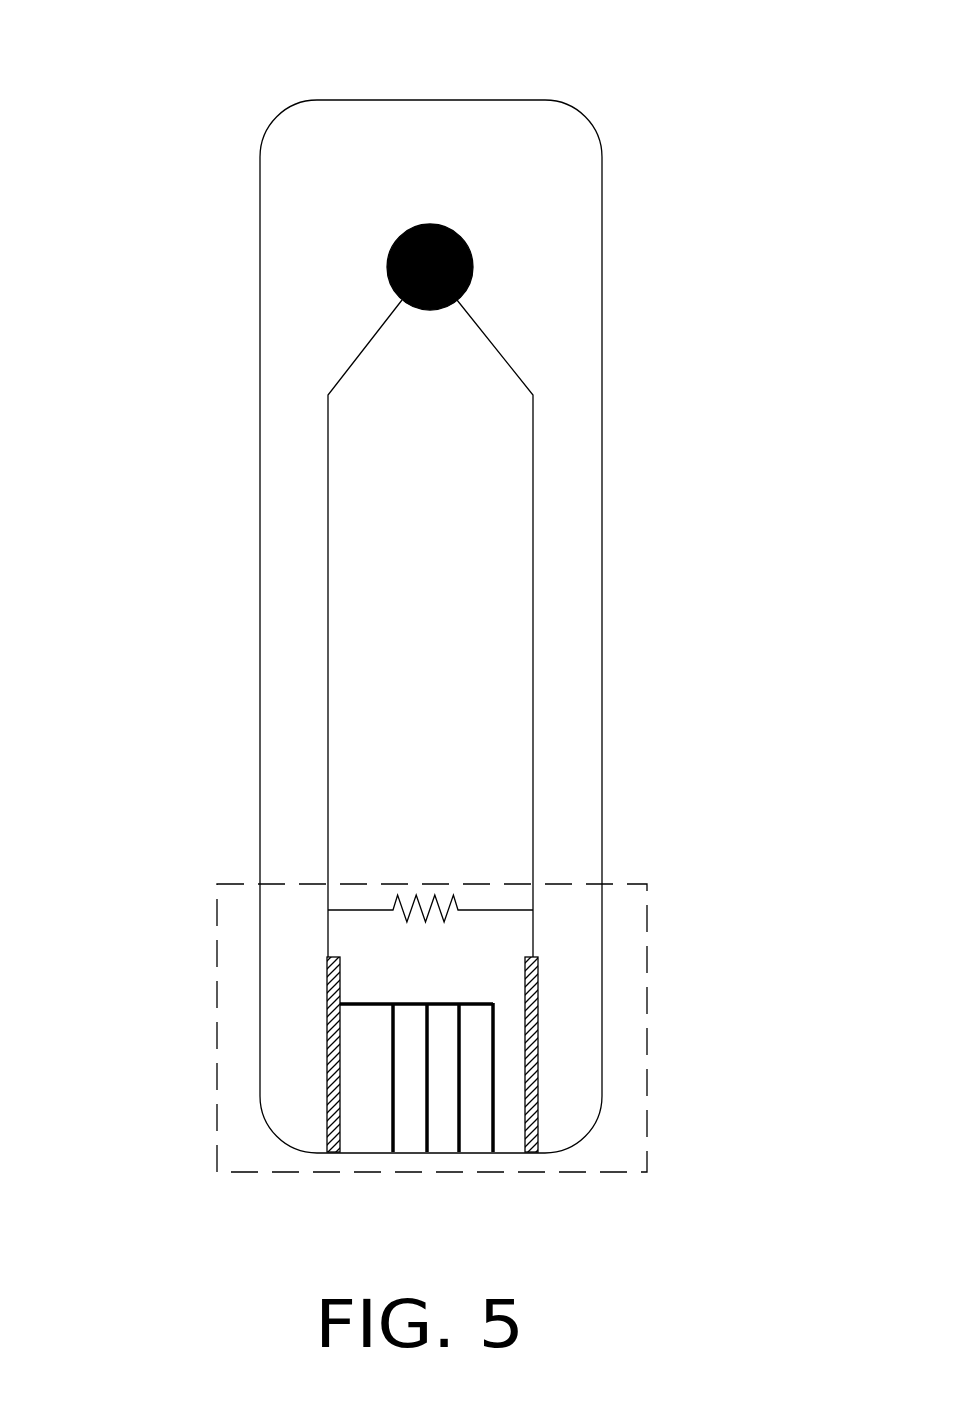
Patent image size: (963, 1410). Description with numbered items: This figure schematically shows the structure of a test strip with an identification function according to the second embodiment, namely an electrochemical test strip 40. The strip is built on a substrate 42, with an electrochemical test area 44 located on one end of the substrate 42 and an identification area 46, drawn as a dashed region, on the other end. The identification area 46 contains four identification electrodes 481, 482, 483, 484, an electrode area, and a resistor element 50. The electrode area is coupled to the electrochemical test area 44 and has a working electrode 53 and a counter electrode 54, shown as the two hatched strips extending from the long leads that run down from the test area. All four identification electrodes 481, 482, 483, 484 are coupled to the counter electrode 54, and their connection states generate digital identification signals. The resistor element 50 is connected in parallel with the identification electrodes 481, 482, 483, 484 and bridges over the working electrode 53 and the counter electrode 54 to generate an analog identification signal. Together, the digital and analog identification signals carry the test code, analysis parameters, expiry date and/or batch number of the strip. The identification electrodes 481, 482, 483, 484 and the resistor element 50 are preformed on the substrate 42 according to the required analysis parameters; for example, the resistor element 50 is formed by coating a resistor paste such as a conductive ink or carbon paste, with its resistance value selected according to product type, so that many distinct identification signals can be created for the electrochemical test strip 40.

The electrochemical test strip 40 is at (668, 250).
The substrate 42 is at (602, 640).
The electrochemical test area 44 is at (428, 222).
The identification area 46 is at (642, 1173).
The resistor element 50 is at (445, 896).
The working electrode 53 is at (538, 957).
The counter electrode 54 is at (327, 957).
The identification electrode 481 is at (500, 1064).
The identification electrode 482 is at (465, 1126).
The identification electrode 483 is at (427, 1130).
The identification electrode 484 is at (392, 1112).